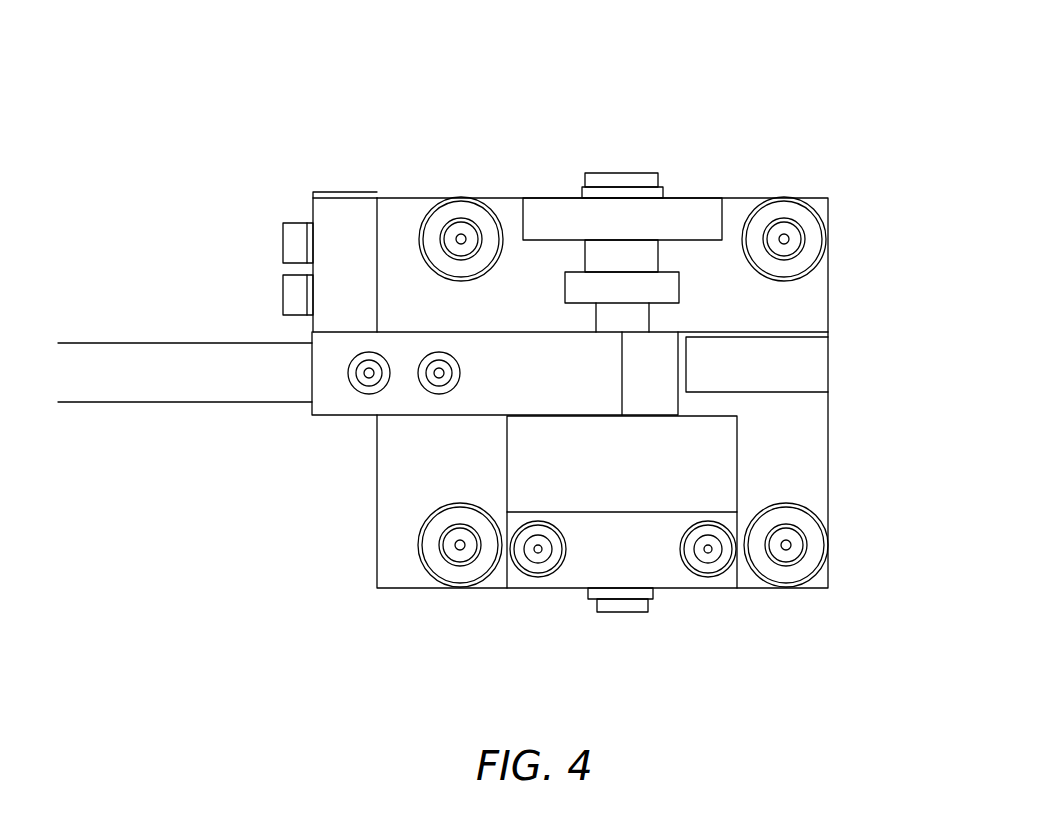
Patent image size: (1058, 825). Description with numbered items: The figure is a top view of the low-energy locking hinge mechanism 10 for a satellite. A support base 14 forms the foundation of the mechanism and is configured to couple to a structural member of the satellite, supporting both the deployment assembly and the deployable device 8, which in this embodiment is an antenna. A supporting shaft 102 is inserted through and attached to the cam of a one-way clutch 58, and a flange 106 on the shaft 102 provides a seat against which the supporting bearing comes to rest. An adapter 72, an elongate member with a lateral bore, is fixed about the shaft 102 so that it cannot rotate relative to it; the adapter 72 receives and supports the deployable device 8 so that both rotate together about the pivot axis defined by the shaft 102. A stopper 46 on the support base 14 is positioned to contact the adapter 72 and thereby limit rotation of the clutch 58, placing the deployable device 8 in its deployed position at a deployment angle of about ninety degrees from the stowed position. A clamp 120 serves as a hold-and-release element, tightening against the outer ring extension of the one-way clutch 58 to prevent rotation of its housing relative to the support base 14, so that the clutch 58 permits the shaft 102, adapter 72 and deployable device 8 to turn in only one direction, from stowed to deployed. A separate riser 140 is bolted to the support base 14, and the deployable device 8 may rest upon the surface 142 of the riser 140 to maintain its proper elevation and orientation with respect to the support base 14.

The low-energy locking hinge mechanism 10 is at (797, 28).
The support base 14 is at (405, 197).
The deployable device 8 is at (222, 385).
The stopper 46 is at (800, 363).
The one-way clutch 58 is at (718, 460).
The adapter 72 is at (333, 402).
The supporting shaft 102 is at (637, 315).
The flange 106 is at (572, 285).
The clamp 120 is at (662, 565).
The riser 140 is at (335, 212).
The surface 142 is at (335, 243).